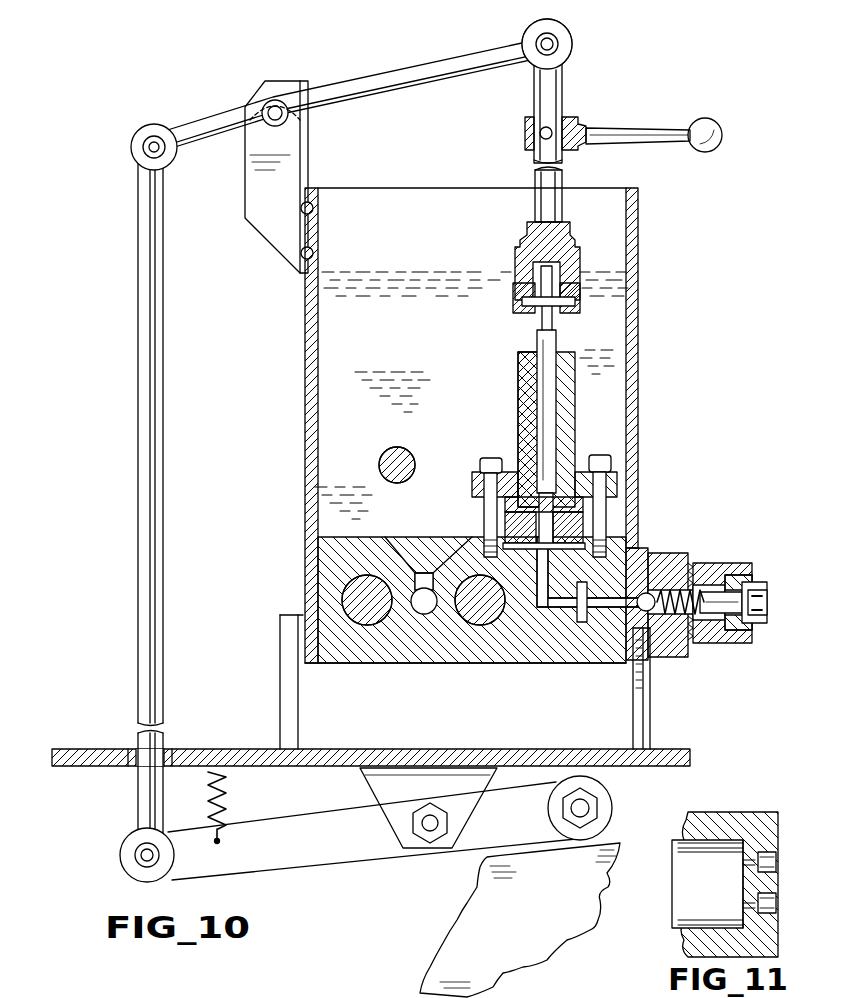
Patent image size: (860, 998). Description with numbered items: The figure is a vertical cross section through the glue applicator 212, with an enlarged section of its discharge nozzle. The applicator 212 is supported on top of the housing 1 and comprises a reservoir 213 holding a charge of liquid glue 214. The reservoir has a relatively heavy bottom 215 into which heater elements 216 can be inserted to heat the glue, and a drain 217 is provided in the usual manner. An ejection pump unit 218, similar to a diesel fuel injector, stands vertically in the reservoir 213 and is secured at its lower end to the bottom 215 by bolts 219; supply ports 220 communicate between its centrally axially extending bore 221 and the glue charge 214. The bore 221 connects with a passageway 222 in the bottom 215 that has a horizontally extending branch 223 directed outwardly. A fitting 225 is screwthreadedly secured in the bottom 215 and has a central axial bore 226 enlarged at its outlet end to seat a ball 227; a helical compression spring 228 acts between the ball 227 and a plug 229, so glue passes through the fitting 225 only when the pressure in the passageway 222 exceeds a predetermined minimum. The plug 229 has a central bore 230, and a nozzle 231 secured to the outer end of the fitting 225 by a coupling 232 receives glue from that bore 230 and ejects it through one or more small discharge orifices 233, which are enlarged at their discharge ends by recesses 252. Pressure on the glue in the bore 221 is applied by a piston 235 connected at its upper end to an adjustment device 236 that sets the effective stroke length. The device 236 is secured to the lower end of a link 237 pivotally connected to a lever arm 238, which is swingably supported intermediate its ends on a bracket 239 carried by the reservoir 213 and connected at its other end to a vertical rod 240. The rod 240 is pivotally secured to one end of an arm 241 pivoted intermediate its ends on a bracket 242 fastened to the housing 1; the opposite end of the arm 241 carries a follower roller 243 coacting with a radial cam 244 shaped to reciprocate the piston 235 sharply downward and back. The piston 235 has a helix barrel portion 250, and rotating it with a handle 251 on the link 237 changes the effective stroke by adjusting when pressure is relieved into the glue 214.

In FIG. 10, the housing 1 is at (515, 752).
In FIG. 10, the glue applicator 212 is at (516, 425).
In FIG. 10, the reservoir 213 is at (636, 420).
In FIG. 10, the liquid glue 214 is at (420, 273).
In FIG. 10, the bottom 215 is at (481, 657).
In FIG. 10, the heater elements 216 is at (473, 614).
In FIG. 10, the drain 217 is at (425, 560).
In FIG. 10, the ejection pump unit 218 is at (575, 418).
In FIG. 10, the bolts 219 is at (498, 456).
In FIG. 10, the supply ports 220 is at (505, 515).
In FIG. 10, the bore 221 is at (505, 545).
In FIG. 10, the passageway 222 is at (631, 556).
In FIG. 10, the branch 223 is at (552, 610).
In FIG. 10, the fitting 225 is at (672, 556).
In FIG. 10, the central axial bore 226 is at (612, 605).
In FIG. 10, the ball 227 is at (648, 612).
In FIG. 10, the helical compression spring 228 is at (690, 613).
In FIG. 10, the plug 229 is at (735, 642).
In FIG. 10, the central bore 230 is at (716, 590).
In FIG. 10, the nozzle 231 is at (768, 585).
In FIG. 11, the nozzle 231 is at (760, 806).
In FIG. 10, the coupling 232 is at (753, 568).
In FIG. 10, the discharge orifices 233 is at (763, 611).
In FIG. 11, the discharge orifices 233 is at (745, 905).
In FIG. 10, the piston 235 is at (536, 390).
In FIG. 10, the adjustment device 236 is at (580, 262).
In FIG. 10, the link 237 is at (565, 101).
In FIG. 10, the lever arm 238 is at (390, 84).
In FIG. 10, the bracket 239 is at (302, 156).
In FIG. 10, the rod 240 is at (167, 374).
In FIG. 10, the arm 241 is at (345, 855).
In FIG. 10, the bracket 242 is at (380, 795).
In FIG. 10, the follower roller 243 is at (613, 808).
In FIG. 10, the radial cam 244 is at (566, 896).
In FIG. 10, the helix barrel portion 250 is at (577, 452).
In FIG. 10, the handle 251 is at (670, 128).
In FIG. 11, the recesses 252 is at (777, 863).